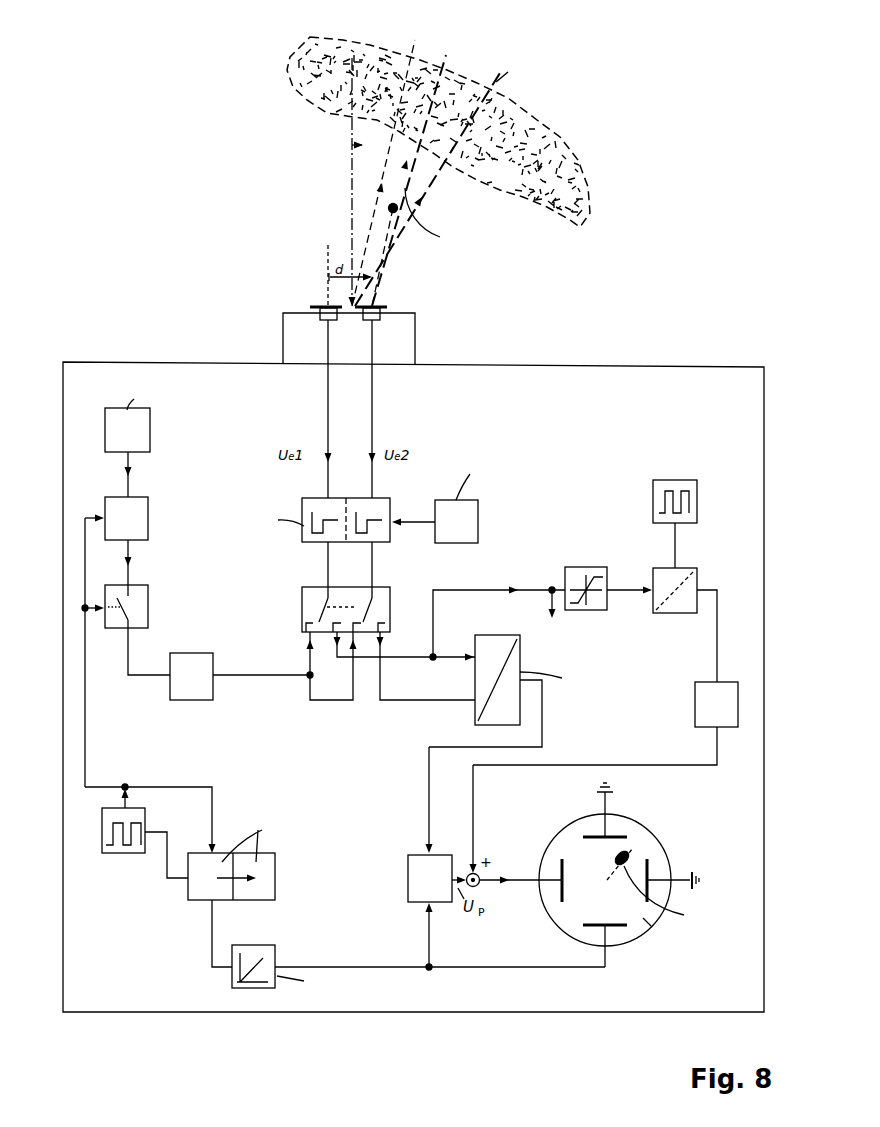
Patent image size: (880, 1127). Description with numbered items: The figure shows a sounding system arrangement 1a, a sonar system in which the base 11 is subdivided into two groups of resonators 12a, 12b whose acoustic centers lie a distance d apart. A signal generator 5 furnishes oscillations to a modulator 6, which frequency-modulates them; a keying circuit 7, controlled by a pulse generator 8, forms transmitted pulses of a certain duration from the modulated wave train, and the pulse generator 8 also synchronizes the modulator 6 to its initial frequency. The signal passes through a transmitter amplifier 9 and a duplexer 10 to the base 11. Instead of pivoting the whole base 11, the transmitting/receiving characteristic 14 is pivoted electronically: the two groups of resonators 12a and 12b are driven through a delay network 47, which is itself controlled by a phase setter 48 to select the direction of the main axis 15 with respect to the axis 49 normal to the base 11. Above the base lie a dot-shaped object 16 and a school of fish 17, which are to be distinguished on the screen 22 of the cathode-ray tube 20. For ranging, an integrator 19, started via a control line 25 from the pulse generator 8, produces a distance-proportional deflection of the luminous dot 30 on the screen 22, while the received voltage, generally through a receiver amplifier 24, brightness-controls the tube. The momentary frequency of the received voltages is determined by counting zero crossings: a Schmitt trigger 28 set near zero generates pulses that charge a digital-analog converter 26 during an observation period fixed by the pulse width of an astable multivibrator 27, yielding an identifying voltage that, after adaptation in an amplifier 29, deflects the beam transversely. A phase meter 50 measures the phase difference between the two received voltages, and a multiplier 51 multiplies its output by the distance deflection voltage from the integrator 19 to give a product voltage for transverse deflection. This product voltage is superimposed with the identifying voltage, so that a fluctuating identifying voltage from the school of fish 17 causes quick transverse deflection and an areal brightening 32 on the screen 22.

The sounding system arrangement 1a is at (588, 376).
The signal generator 5 is at (150, 428).
The modulator 6 is at (148, 517).
The keying circuit 7 is at (148, 605).
The pulse generator 8 is at (145, 822).
The transmitter amplifier 9 is at (205, 698).
The duplexer 10 is at (305, 606).
The base 11 is at (408, 347).
The first group of resonators 12a is at (317, 311).
The second group of resonators 12b is at (382, 308).
The transmitting/receiving characteristic 14 is at (371, 222).
The main axis 15 is at (458, 66).
The dot-shaped object 16 is at (395, 212).
The school of fish 17 is at (588, 212).
The integrator 19 is at (275, 956).
The cathode-ray tube 20 is at (650, 828).
The screen 22 is at (652, 927).
The receiver amplifier 24 is at (608, 615).
The control line 25 is at (275, 870).
The digital-analog converter 26 is at (697, 573).
The astable multivibrator 27 is at (697, 513).
The Schmitt trigger 28 is at (597, 567).
The amplifier 29 is at (696, 716).
The luminous dot 30 is at (667, 896).
The areal brightening 32 is at (648, 860).
The delay network 47 is at (308, 518).
The phase setter 48 is at (478, 522).
The axis normal to the base 49 is at (351, 140).
The phase meter 50 is at (520, 668).
The multiplier 51 is at (407, 871).